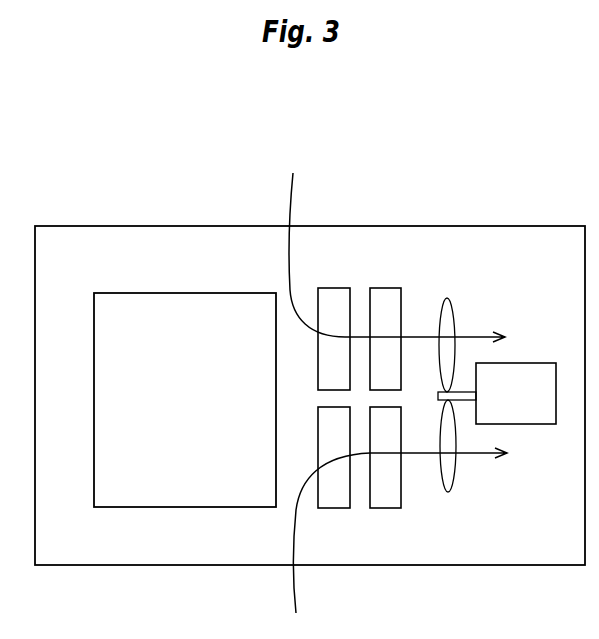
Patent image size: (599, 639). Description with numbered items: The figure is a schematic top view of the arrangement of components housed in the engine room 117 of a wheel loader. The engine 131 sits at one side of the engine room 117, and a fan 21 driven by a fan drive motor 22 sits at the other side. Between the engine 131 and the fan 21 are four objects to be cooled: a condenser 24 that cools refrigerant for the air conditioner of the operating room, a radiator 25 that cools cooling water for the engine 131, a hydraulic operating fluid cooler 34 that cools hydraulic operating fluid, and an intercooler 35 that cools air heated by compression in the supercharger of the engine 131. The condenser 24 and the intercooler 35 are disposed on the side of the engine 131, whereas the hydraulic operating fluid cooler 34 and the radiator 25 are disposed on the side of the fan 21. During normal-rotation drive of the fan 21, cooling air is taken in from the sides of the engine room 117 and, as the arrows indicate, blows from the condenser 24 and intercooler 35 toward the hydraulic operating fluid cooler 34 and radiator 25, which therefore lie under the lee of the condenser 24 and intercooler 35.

The engine room 117 is at (543, 226).
The engine 131 is at (200, 292).
The condenser 24 is at (340, 288).
The hydraulic operating fluid cooler 34 is at (395, 288).
The intercooler 35 is at (337, 508).
The radiator 25 is at (389, 508).
The fan 21 is at (455, 320).
The fan drive motor 22 is at (538, 363).